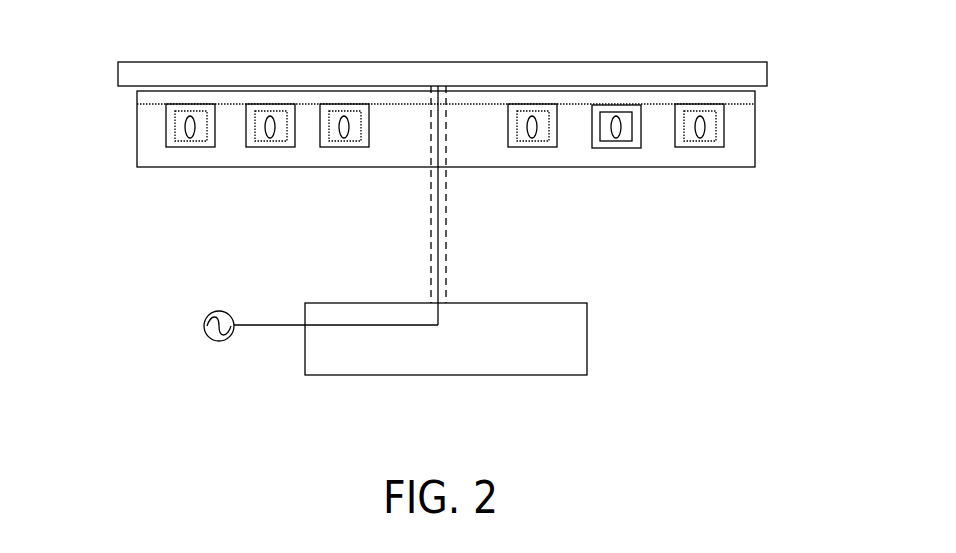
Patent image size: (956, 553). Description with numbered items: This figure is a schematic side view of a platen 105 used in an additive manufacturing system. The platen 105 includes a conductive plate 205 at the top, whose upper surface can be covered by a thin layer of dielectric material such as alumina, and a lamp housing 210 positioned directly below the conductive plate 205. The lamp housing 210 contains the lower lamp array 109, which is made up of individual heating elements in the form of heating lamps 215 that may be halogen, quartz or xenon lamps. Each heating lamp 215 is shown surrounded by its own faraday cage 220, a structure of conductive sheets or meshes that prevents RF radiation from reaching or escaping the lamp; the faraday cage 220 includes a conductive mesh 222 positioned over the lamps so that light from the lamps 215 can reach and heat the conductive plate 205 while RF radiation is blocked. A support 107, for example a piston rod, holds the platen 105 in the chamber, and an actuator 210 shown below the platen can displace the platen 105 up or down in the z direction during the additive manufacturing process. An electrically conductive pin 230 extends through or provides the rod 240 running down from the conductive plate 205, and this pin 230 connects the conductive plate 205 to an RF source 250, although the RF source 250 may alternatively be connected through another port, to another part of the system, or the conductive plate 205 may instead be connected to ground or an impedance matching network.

The platen 105 is at (787, 187).
The support 107 is at (420, 256).
The lower lamp array 109 is at (770, 105).
The conductive plate 205 is at (182, 80).
The lamp housing 210 is at (138, 128).
The heating lamp 215 is at (620, 133).
The faraday cage 220 is at (610, 147).
The conductive mesh 222 is at (402, 105).
The electrically conductive pin 230 is at (440, 228).
The rod 240 is at (446, 190).
The RF source 250 is at (222, 312).